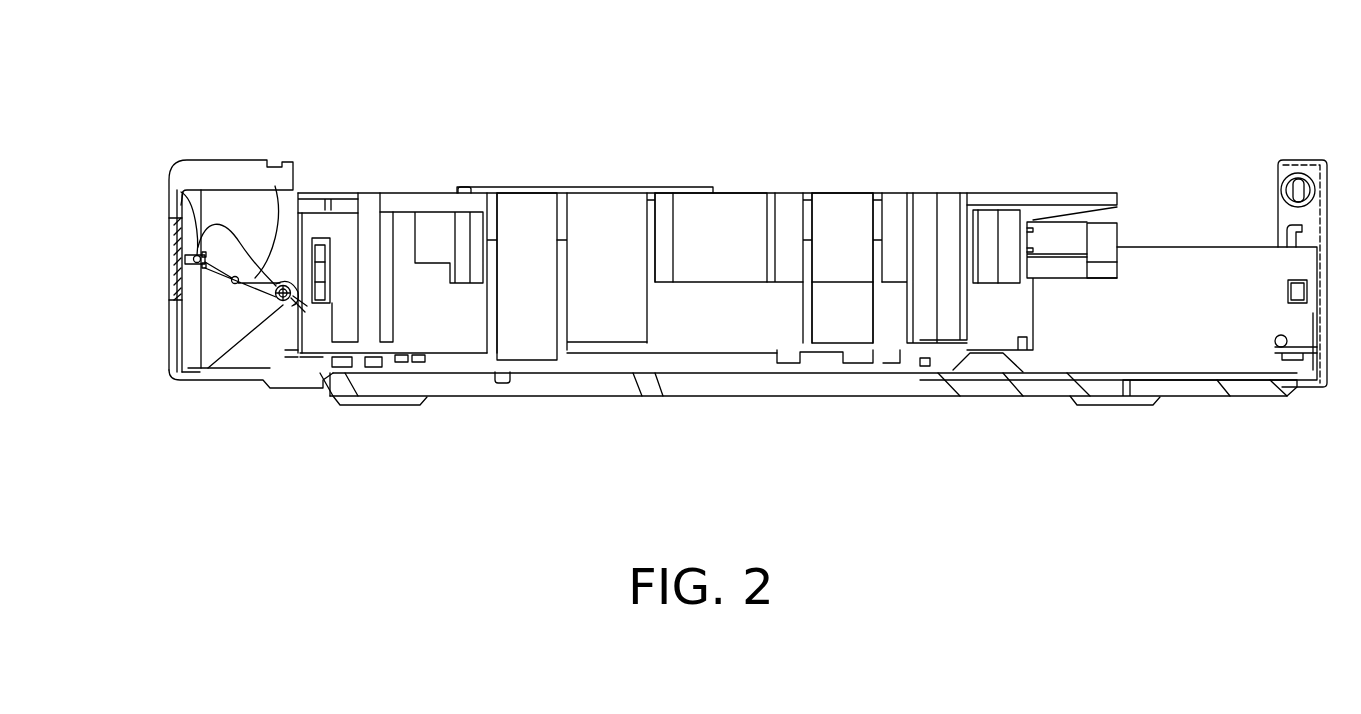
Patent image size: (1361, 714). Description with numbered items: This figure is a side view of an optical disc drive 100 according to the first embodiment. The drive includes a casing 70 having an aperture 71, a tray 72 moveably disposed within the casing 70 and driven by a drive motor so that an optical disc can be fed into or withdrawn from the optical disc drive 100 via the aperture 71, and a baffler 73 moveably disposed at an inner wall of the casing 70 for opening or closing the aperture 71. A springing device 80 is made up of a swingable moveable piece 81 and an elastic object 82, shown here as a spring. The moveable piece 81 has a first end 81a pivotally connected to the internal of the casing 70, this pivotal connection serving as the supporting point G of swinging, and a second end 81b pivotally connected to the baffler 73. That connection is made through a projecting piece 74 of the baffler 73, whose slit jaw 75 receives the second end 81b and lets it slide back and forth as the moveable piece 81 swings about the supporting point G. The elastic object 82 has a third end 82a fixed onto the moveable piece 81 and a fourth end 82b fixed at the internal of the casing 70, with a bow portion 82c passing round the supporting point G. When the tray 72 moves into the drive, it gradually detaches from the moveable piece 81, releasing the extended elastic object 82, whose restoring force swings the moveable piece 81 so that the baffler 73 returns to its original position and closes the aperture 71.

The optical disc drive 100 is at (1337, 79).
The casing 70 is at (168, 350).
The aperture 71 is at (165, 220).
The tray 72 is at (1102, 240).
The baffler 73 is at (197, 253).
The projecting piece 74 is at (187, 260).
The slit jaw 75 is at (205, 268).
The springing device 80 is at (370, 103).
The moveable piece 81 is at (240, 250).
The first end 81a is at (290, 293).
The second end 81b is at (195, 247).
The elastic object 82 is at (273, 213).
The third end 82a is at (235, 276).
The fourth end 82b is at (208, 368).
The bow portion 82c is at (297, 305).
The supporting point G is at (290, 305).